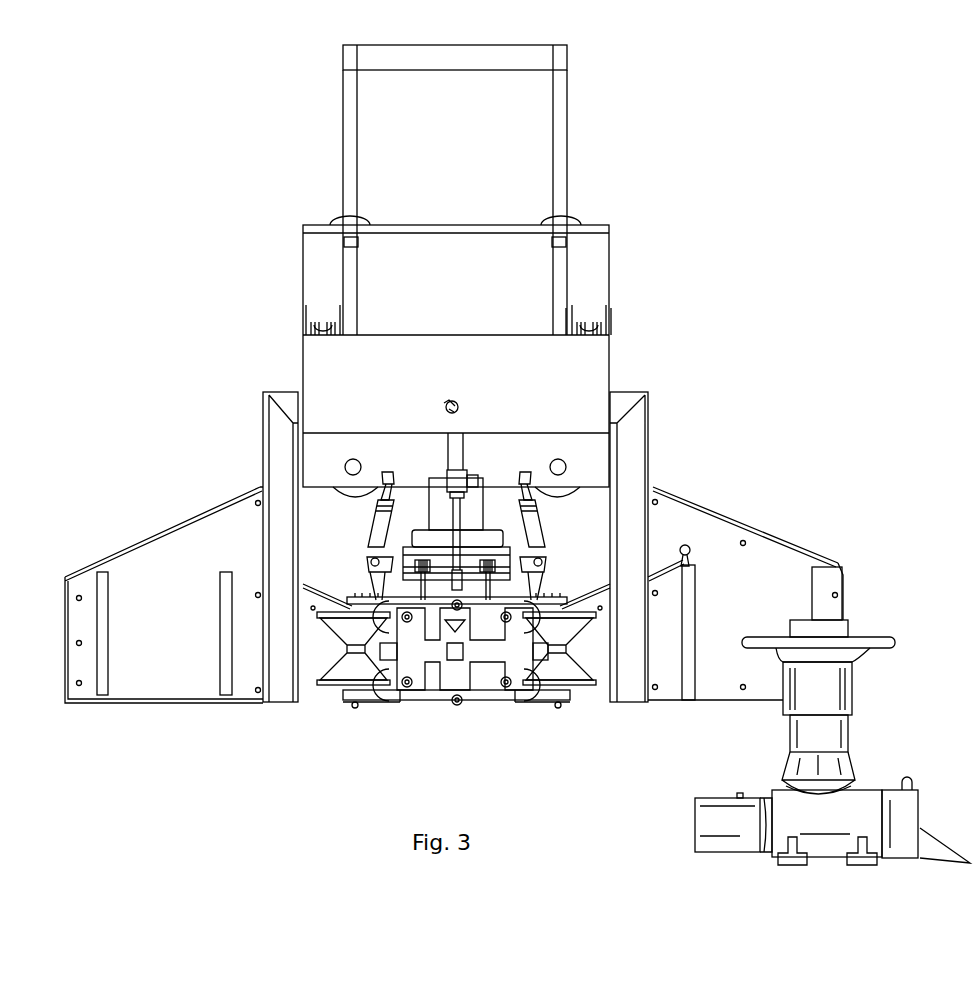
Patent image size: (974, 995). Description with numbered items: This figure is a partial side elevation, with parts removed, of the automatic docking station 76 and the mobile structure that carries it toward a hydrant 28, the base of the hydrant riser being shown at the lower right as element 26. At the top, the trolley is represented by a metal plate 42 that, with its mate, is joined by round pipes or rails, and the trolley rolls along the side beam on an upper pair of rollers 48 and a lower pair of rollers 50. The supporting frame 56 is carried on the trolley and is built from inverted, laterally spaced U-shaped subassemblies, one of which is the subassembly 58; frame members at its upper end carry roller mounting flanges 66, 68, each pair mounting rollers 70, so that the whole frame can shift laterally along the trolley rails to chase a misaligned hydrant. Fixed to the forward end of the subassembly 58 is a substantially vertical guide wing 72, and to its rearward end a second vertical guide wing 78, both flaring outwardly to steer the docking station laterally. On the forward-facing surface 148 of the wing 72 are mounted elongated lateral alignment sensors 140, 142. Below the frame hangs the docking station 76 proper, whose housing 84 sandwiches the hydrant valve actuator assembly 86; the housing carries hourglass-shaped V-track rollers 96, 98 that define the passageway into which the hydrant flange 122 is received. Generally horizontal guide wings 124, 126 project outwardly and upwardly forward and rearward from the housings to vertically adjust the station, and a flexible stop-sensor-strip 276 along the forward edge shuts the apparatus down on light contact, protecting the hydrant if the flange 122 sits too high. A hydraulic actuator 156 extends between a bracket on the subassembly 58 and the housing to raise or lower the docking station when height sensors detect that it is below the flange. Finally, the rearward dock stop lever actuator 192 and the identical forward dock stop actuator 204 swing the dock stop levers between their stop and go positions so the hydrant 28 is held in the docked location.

The pump inlet 26 is at (723, 820).
The hydrant 28 is at (860, 702).
The metal plate 42 is at (588, 360).
The upper pair of rollers 48 is at (340, 217).
The lower pair of rollers 50 is at (340, 493).
The supporting frame 56 is at (656, 443).
The U-shaped subassembly 58 is at (262, 403).
The roller mounting flange 66 is at (303, 311).
The roller mounting flange 68 is at (605, 323).
The roller 70 is at (323, 327).
The guide wing 72 is at (802, 545).
The docking station 76 is at (383, 718).
The guide wing 78 is at (148, 523).
The housing 84 is at (470, 702).
The hydrant valve actuator assembly 86 is at (438, 468).
The V-track roller 96 is at (570, 672).
The V-track roller 98 is at (345, 672).
The hydrant flange 122 is at (873, 640).
The horizontal guide wing 124 is at (592, 596).
The horizontal guide wing 126 is at (322, 598).
The lateral alignment sensor 140 is at (820, 575).
The lateral alignment sensor 142 is at (690, 630).
The forward-facing surface 148 is at (705, 528).
The hydraulic actuator 156 is at (470, 455).
The rearward dock stop lever actuator 192 is at (404, 517).
The dock stop actuator 204 is at (510, 515).
The stop-sensor-strip 276 is at (688, 548).